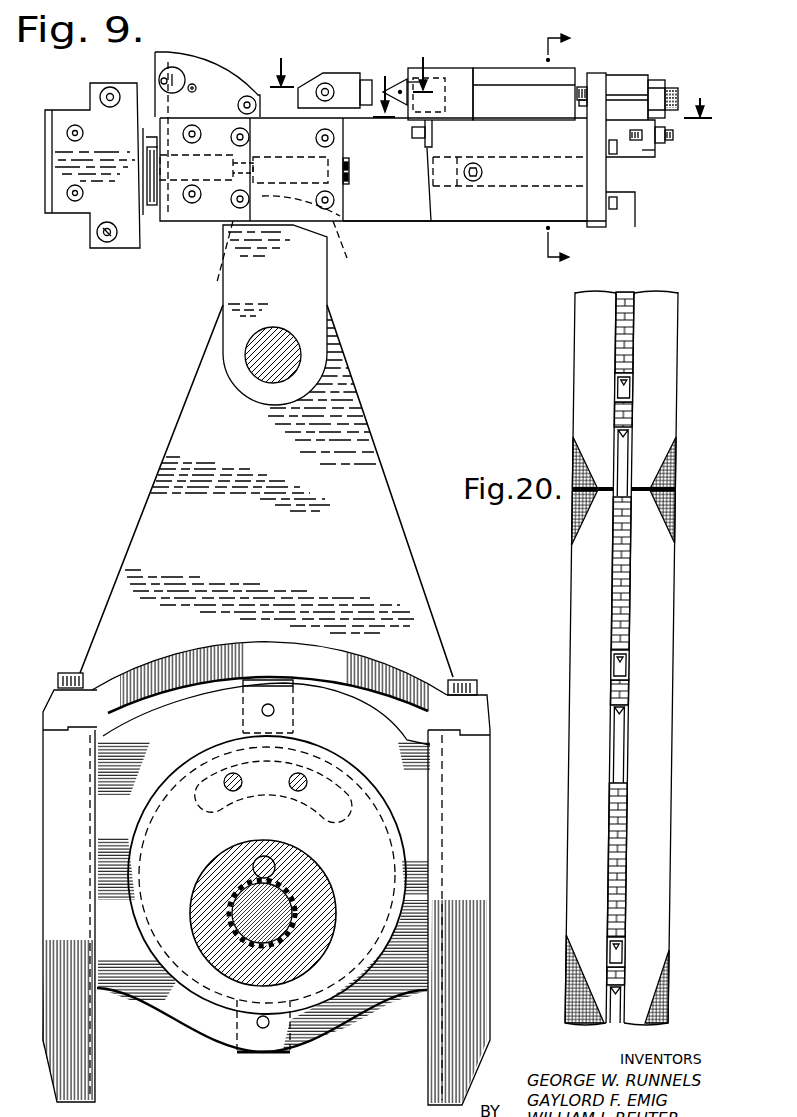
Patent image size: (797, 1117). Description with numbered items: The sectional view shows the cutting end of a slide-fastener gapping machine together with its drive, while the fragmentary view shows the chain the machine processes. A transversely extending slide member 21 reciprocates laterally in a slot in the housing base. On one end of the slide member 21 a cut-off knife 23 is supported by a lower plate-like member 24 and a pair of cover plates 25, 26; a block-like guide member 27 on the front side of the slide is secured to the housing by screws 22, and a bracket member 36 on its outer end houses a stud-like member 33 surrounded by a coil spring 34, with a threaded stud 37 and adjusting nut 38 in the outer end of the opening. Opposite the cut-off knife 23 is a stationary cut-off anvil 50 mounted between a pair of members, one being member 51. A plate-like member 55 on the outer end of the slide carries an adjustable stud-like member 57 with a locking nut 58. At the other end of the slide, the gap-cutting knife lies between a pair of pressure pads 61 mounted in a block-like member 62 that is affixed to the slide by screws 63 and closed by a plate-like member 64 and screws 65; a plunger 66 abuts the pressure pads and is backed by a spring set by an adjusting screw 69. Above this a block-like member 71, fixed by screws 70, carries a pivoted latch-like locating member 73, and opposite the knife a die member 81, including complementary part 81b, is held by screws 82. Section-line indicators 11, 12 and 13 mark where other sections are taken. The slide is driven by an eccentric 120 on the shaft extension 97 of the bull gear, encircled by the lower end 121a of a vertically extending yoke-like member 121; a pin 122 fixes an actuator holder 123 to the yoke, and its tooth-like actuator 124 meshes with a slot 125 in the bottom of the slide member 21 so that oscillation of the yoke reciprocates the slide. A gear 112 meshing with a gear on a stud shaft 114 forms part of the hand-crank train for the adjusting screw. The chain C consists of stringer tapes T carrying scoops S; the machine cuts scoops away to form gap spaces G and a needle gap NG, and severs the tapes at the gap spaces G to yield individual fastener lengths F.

In FIG. 9, the die member 81 is at (66, 216).
In FIG. 9, the complementary die part 81b is at (60, 167).
In FIG. 9, the screws 82 is at (110, 90).
In FIG. 9, the latch-like locating member 73 is at (150, 130).
In FIG. 9, the pressure pads 61 is at (150, 210).
In FIG. 9, the block-like member 71 is at (210, 85).
In FIG. 9, the screws 70 is at (194, 84).
In FIG. 9, the slide member 21 is at (411, 208).
In FIG. 9, the plate-like member 64 is at (197, 210).
In FIG. 9, the screws 65 is at (236, 208).
In FIG. 9, the plunger 66 is at (258, 158).
In FIG. 9, the screws 63 is at (335, 138).
In FIG. 9, the adjusting screw 69 is at (350, 170).
In FIG. 9, the block-like member 62 is at (345, 218).
In FIG. 9, the slot 125 is at (350, 248).
In FIG. 9, the actuator 124 is at (215, 284).
In FIG. 9, the actuator holder 123 is at (307, 300).
In FIG. 9, the pin 122 is at (293, 357).
In FIG. 9, the yoke-like member 121 is at (143, 531).
In FIG. 9, the eccentric 120 is at (370, 825).
In FIG. 9, the lower end of yoke-like member 121a is at (420, 932).
In FIG. 9, the gear 112 is at (315, 887).
In FIG. 9, the shaft extension 97 is at (327, 916).
In FIG. 9, the stud shaft 114 is at (276, 866).
In FIG. 9, the section line 13 is at (354, 66).
In FIG. 9, the section line 11 is at (543, 88).
In FIG. 9, the section line 12 is at (572, 147).
In FIG. 9, the member 51 is at (333, 73).
In FIG. 9, the cut-off anvil 50 is at (368, 80).
In FIG. 9, the cut-off knife 23 is at (393, 88).
In FIG. 9, the cover plate 25 is at (455, 68).
In FIG. 9, the cover plate 26 is at (500, 68).
In FIG. 9, the lower plate-like member 24 is at (457, 112).
In FIG. 9, the screws 22 is at (476, 168).
In FIG. 9, the block-like guide member 27 is at (496, 214).
In FIG. 9, the bracket member 36 is at (598, 172).
In FIG. 9, the stud-like member 33 is at (582, 88).
In FIG. 9, the coil spring 34 is at (590, 98).
In FIG. 9, the adjusting nut 38 is at (656, 78).
In FIG. 9, the threaded stud 37 is at (672, 86).
In FIG. 9, the adjustable stud-like member 57 is at (675, 136).
In FIG. 9, the locking nut 58 is at (662, 143).
In FIG. 9, the plate-like member 55 is at (657, 150).
In FIG. 20, the stringer tapes T is at (582, 337).
In FIG. 20, the needle gap NG is at (625, 387).
In FIG. 20, the gap spaces G is at (695, 458).
In FIG. 20, the fastener elements or scoops S is at (693, 534).
In FIG. 20, the slide fastener chain C is at (703, 588).
In FIG. 20, the fastener lengths F is at (697, 398).